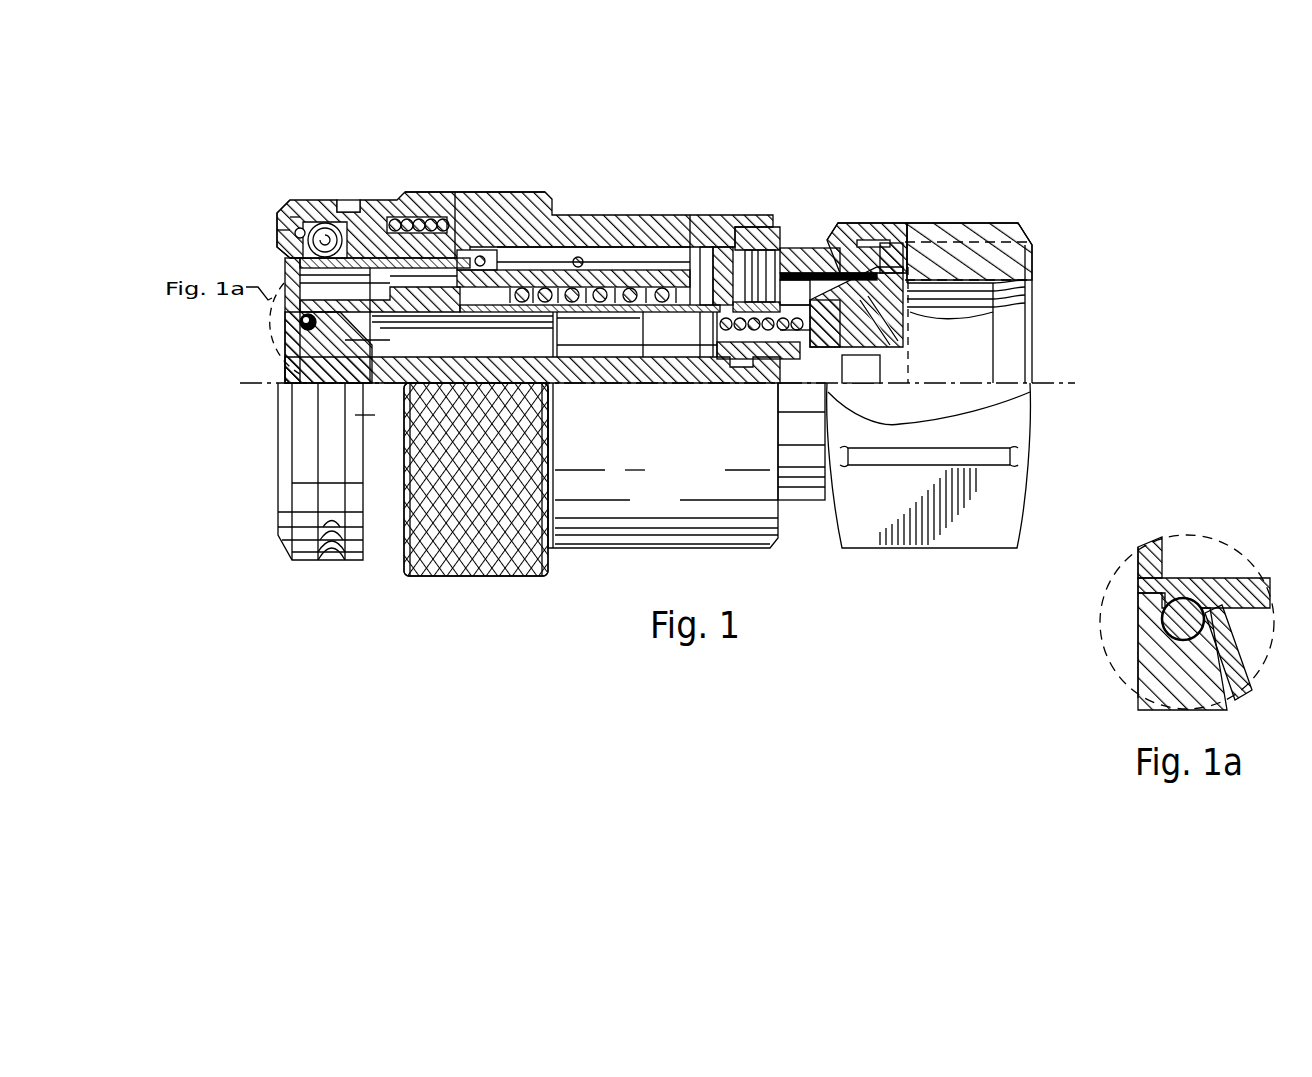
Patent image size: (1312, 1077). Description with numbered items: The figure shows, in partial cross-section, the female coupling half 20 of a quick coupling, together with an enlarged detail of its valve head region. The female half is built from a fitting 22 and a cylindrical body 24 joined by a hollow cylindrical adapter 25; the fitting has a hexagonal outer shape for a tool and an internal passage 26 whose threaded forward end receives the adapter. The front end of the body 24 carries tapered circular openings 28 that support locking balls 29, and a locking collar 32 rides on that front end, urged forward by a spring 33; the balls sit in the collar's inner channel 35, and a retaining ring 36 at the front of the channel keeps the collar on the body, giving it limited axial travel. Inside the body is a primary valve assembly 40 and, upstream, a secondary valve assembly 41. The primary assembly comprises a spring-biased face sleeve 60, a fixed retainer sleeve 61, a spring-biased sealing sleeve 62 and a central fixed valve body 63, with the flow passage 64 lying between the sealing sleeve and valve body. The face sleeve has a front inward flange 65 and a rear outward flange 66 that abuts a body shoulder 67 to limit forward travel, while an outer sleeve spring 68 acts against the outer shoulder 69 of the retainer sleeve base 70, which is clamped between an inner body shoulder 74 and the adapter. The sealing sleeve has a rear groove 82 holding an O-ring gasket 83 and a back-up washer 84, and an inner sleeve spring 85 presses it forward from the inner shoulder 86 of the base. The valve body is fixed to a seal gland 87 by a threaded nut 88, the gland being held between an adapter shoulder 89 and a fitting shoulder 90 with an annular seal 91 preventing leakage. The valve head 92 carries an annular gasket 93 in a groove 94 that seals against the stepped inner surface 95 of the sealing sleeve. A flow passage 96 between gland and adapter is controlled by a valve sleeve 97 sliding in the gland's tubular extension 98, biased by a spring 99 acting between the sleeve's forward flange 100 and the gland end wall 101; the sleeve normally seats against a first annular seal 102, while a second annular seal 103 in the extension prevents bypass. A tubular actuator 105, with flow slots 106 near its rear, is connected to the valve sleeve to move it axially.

In FIG. 1, the female coupling half 20 is at (946, 110).
In FIG. 1, the fitting 22 is at (990, 225).
In FIG. 1, the cylindrical body 24 is at (600, 215).
In FIG. 1, the hollow cylindrical adapter 25 is at (812, 240).
In FIG. 1, the passage 26 is at (950, 325).
In FIG. 1, the circular openings 28 is at (333, 200).
In FIG. 1, the locking balls 29 is at (325, 222).
In FIG. 1, the locking collar 32 is at (312, 200).
In FIG. 1, the spring 33 is at (398, 200).
In FIG. 1, the inner circumferential channel 35 is at (290, 201).
In FIG. 1, the retaining ring 36 is at (283, 226).
In FIG. 1, the primary valve assembly 40 is at (485, 258).
In FIG. 1, the secondary valve assembly 41 is at (710, 215).
In FIG. 1, the face sleeve 60 is at (372, 385).
In FIG. 1, the retainer sleeve 61 is at (613, 270).
In FIG. 1, the sealing sleeve 62 is at (455, 300).
In FIG. 1A, the sealing sleeve 62 is at (1138, 580).
In FIG. 1, the valve body 63 is at (362, 385).
In FIG. 1, the flow passage 64 is at (615, 357).
In FIG. 1, the radially-inward directed annular flange 65 is at (290, 278).
In FIG. 1, the radially-outward directed annular flange 66 is at (443, 215).
In FIG. 1, the annular shoulder 67 is at (428, 217).
In FIG. 1, the outer sleeve spring 68 is at (572, 247).
In FIG. 1, the outer shoulder 69 is at (620, 287).
In FIG. 1, the base 70 is at (668, 215).
In FIG. 1, the inner shoulder 74 is at (647, 247).
In FIG. 1, the groove 82 is at (548, 385).
In FIG. 1, the O-ring gasket 83 is at (530, 192).
In FIG. 1, the back-up washer 84 is at (488, 215).
In FIG. 1, the inner sleeve spring 85 is at (560, 332).
In FIG. 1, the inner shoulder 86 is at (690, 347).
In FIG. 1, the seal gland 87 is at (1013, 398).
In FIG. 1, the threaded nut 88 is at (880, 366).
In FIG. 1, the annular shoulder 89 is at (855, 235).
In FIG. 1, the annular shoulder 90 is at (908, 312).
In FIG. 1, the annular seal 91 is at (902, 228).
In FIG. 1, the valve head 92 is at (292, 370).
In FIG. 1A, the valve head 92 is at (1225, 700).
In FIG. 1A, the annular gasket 93 is at (1188, 623).
In FIG. 1A, the groove 94 is at (1160, 618).
In FIG. 1A, the stepped inner surface 95 is at (1175, 578).
In FIG. 1, the flow passage 96 is at (870, 228).
In FIG. 1, the valve sleeve 97 is at (740, 227).
In FIG. 1, the tubular extension 98 is at (800, 250).
In FIG. 1, the spring 99 is at (838, 240).
In FIG. 1, the forward flange 100 is at (742, 332).
In FIG. 1, the annular end wall 101 is at (823, 395).
In FIG. 1, the first annular seal 102 is at (712, 215).
In FIG. 1, the second annular seal 103 is at (765, 300).
In FIG. 1, the tubular actuator 105 is at (645, 350).
In FIG. 1, the flow slots 106 is at (697, 357).